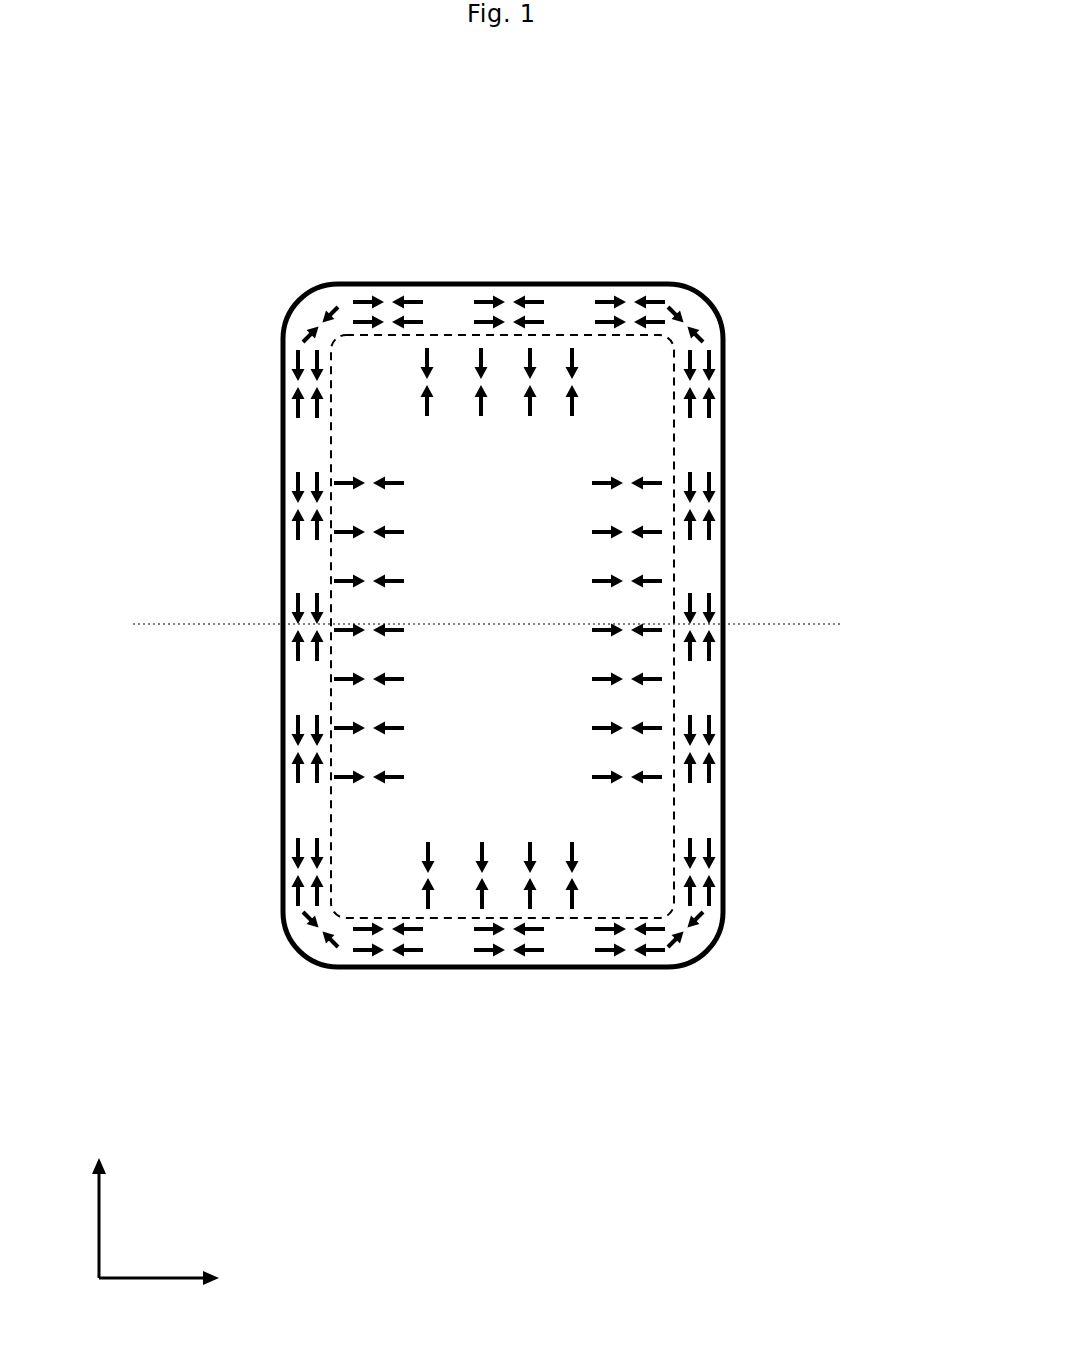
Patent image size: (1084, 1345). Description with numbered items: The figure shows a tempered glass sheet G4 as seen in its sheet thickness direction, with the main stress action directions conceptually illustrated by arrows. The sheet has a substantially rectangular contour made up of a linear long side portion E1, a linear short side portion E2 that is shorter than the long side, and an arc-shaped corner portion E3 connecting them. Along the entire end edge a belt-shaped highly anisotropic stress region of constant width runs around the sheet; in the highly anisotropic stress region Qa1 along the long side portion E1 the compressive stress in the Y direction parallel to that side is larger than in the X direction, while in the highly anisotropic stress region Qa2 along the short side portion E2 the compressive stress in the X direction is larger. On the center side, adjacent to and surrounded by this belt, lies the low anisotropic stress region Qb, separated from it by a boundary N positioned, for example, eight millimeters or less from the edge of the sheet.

The tempered glass sheet G4 is at (170, 150).
The long side portion E1 is at (277, 773).
The short side portion E2 is at (557, 285).
The corner portion E3 is at (301, 299).
The boundary N is at (675, 447).
The highly anisotropic stress region along the long side portion Qa1 is at (305, 470).
The highly anisotropic stress region along the short side portion Qa2 is at (446, 312).
The low anisotropic stress region Qb is at (623, 567).